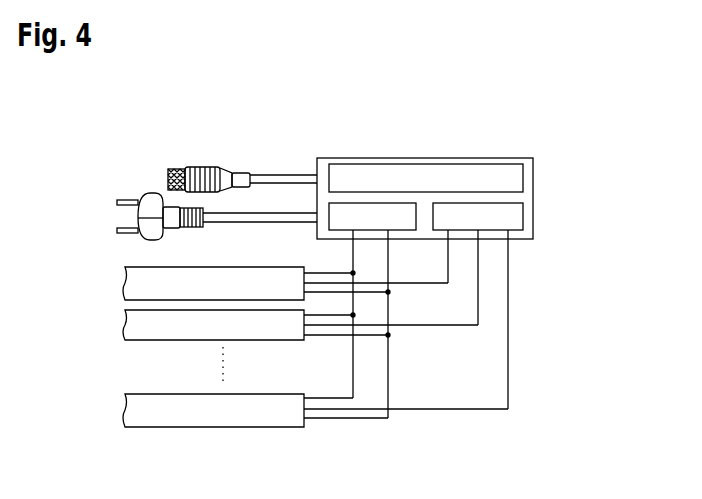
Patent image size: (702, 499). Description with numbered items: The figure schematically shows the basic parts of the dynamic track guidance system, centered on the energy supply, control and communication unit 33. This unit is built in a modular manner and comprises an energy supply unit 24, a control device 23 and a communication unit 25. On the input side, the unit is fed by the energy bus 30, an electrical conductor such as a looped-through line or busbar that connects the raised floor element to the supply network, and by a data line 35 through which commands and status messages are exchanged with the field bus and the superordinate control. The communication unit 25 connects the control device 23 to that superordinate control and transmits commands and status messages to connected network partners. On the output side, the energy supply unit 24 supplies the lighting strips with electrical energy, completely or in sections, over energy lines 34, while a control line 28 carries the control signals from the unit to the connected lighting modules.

The energy bus 30 is at (146, 197).
The data line 35 is at (201, 167).
The energy supply, control and communication unit 33 is at (427, 180).
The communication unit 25 is at (513, 177).
The energy supply unit 24 is at (333, 225).
The control device 23 is at (513, 215).
The control line 28 is at (508, 332).
The energy line 34 is at (355, 388).